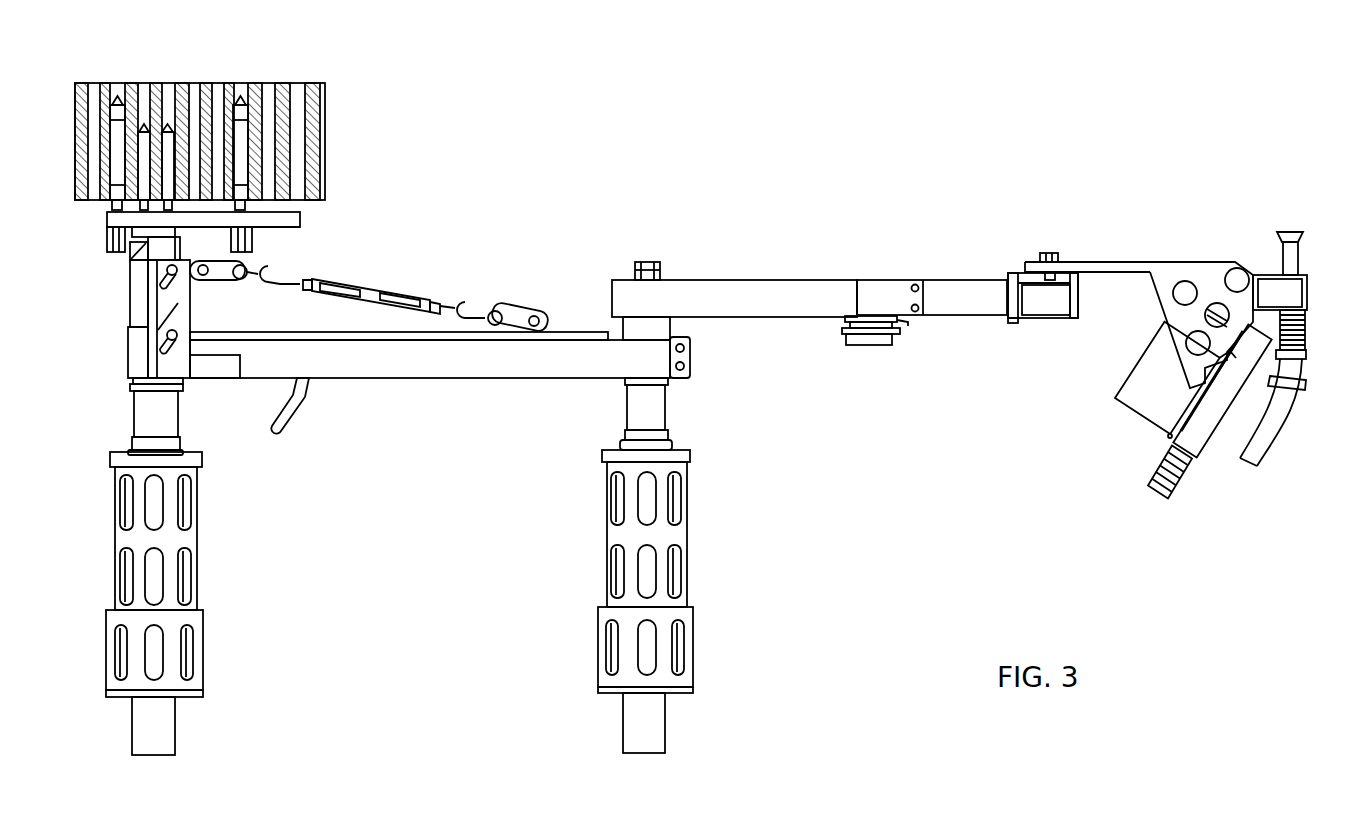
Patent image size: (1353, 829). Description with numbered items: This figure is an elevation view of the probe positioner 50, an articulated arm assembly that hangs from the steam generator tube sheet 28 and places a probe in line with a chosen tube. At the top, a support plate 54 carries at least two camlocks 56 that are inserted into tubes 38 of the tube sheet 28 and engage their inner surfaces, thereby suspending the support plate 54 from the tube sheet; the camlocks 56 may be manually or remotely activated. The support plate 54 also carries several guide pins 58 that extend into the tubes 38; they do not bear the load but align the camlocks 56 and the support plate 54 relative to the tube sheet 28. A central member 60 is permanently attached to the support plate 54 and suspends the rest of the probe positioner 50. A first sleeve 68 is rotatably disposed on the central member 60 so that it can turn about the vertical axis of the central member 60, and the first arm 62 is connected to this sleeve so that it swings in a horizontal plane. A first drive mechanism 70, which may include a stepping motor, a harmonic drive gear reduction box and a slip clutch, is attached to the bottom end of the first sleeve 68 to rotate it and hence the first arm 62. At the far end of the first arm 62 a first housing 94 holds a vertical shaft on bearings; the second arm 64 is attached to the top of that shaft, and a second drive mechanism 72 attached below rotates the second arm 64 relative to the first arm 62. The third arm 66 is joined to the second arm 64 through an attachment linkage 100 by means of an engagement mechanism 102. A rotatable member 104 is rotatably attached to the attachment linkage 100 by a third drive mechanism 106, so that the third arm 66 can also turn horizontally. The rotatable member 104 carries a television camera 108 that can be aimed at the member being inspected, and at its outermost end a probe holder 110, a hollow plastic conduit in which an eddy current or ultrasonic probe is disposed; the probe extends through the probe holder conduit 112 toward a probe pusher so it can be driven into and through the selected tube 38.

The tube sheet 28 is at (322, 146).
The tubes 38 is at (321, 84).
The camlocks 56 is at (117, 97).
The guide pins 58 is at (168, 126).
The support plate 54 is at (302, 222).
The central member 60 is at (143, 243).
The first sleeve 68 is at (143, 306).
The first arm 62 is at (398, 362).
The first housing 94 is at (655, 325).
The second arm 64 is at (812, 286).
The attachment linkage 100 is at (962, 318).
The engagement mechanism 102 is at (912, 330).
The third drive mechanism 106 is at (1038, 303).
The rotatable member 104 is at (1122, 271).
The third arm 66 is at (1205, 260).
The television camera 108 is at (1148, 412).
The probe holder 110 is at (1298, 254).
The probe holder conduit 112 is at (1268, 436).
The first drive mechanism 70 is at (192, 536).
The second drive mechanism 72 is at (680, 580).
The probe positioner 50 is at (848, 458).